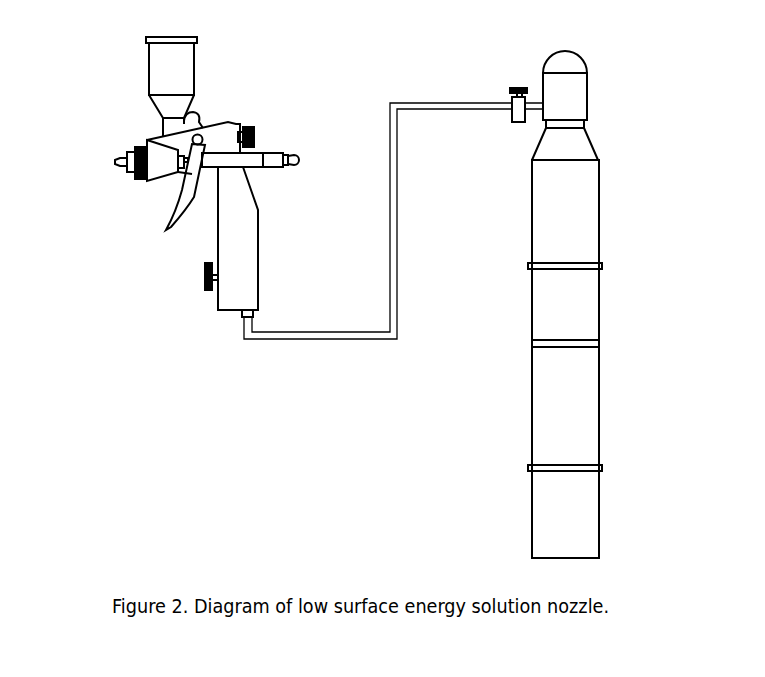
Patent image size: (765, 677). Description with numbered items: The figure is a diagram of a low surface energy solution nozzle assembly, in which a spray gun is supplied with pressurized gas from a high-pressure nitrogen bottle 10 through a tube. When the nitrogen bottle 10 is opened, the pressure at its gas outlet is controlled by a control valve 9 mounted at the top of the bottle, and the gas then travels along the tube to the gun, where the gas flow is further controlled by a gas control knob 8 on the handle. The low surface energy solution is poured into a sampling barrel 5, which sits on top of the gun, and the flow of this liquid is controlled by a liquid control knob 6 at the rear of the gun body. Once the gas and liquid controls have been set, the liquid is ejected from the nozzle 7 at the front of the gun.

The sampling barrel 5 is at (194, 68).
The liquid control knob 6 is at (251, 127).
The nozzle 7 is at (117, 162).
The gas control knob 8 is at (205, 288).
The control valve 9 is at (510, 87).
The high-pressure nitrogen bottle 10 is at (600, 317).